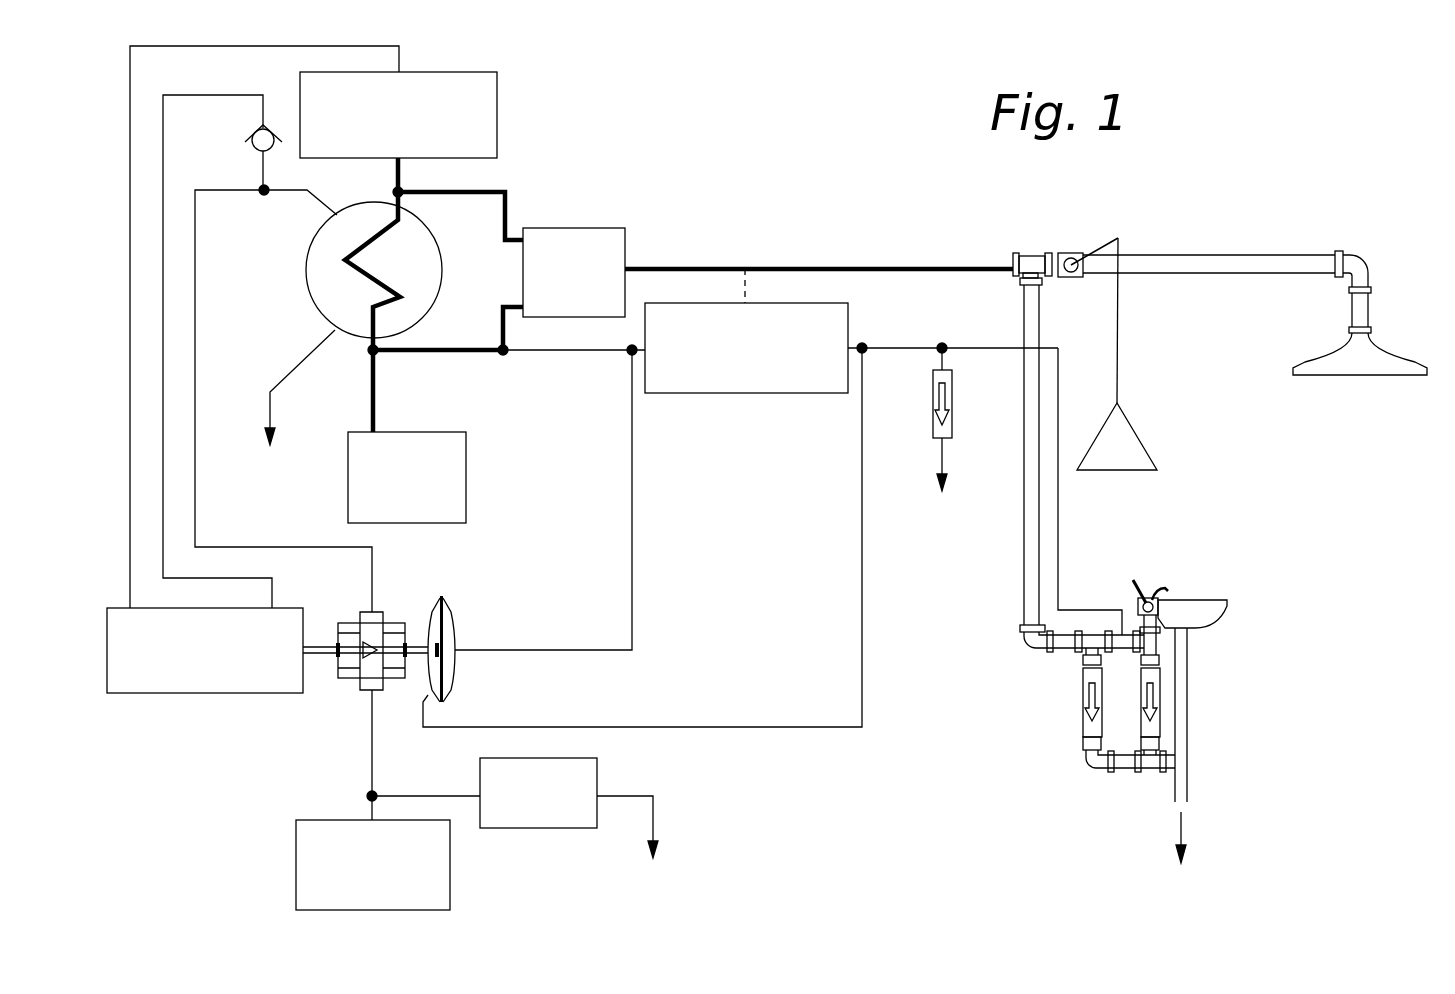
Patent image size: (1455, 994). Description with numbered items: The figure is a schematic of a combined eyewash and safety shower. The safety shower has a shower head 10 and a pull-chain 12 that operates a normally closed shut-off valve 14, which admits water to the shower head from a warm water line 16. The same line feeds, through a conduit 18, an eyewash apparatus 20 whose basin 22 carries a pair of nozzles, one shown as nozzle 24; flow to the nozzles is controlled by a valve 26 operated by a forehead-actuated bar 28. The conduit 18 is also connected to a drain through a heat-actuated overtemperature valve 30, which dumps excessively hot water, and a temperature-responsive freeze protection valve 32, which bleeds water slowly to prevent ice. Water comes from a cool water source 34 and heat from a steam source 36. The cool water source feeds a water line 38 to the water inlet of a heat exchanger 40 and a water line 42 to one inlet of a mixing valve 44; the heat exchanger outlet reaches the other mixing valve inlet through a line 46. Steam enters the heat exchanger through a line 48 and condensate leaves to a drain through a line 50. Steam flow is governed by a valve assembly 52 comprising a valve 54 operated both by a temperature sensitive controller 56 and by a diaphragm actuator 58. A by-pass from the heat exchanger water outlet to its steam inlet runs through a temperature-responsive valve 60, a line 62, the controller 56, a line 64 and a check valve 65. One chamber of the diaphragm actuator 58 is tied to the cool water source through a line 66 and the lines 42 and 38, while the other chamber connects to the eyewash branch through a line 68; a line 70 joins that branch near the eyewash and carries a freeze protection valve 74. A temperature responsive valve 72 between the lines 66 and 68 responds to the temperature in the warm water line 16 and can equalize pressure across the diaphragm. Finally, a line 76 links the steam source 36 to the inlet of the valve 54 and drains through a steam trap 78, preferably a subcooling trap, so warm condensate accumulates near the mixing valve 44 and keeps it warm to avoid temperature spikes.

The shower head 10 is at (1357, 378).
The pull-chain 12 is at (1140, 435).
The shut-off valve 14 is at (1070, 252).
The warm water line 16 is at (865, 269).
The conduit 18 is at (1022, 560).
The eyewash apparatus 20 is at (1228, 590).
The basin 22 is at (1222, 615).
The nozzle 24 is at (1162, 590).
The valve 26 is at (1137, 607).
The forehead-actuated bar 28 is at (1142, 585).
The heat-actuated overtemperature valve 30 is at (1083, 700).
The temperature-responsive freeze protection valve 32 is at (1160, 700).
The cool water source 34 is at (466, 485).
The steam source 36 is at (296, 873).
The water line 38 is at (377, 412).
The heat exchanger 40 is at (300, 262).
The water line 42 is at (472, 352).
The mixing valve 44 is at (578, 228).
The line 46 is at (505, 185).
The line 48 is at (195, 270).
The line 50 is at (300, 360).
The valve assembly 52 is at (432, 585).
The valve 54 is at (355, 685).
The temperature sensitive controller 56 is at (228, 693).
The diaphragm actuator 58 is at (452, 620).
The temperature-responsive valve 60 is at (497, 118).
The line 62 is at (130, 130).
The line 64 is at (163, 138).
The check valve 65 is at (258, 128).
The line 66 is at (632, 540).
The line 68 is at (862, 598).
The line 70 is at (1058, 478).
The temperature responsive valve 72 is at (745, 393).
The freeze protection valve 74 is at (930, 392).
The line 76 is at (372, 757).
The steam trap 78 is at (565, 828).